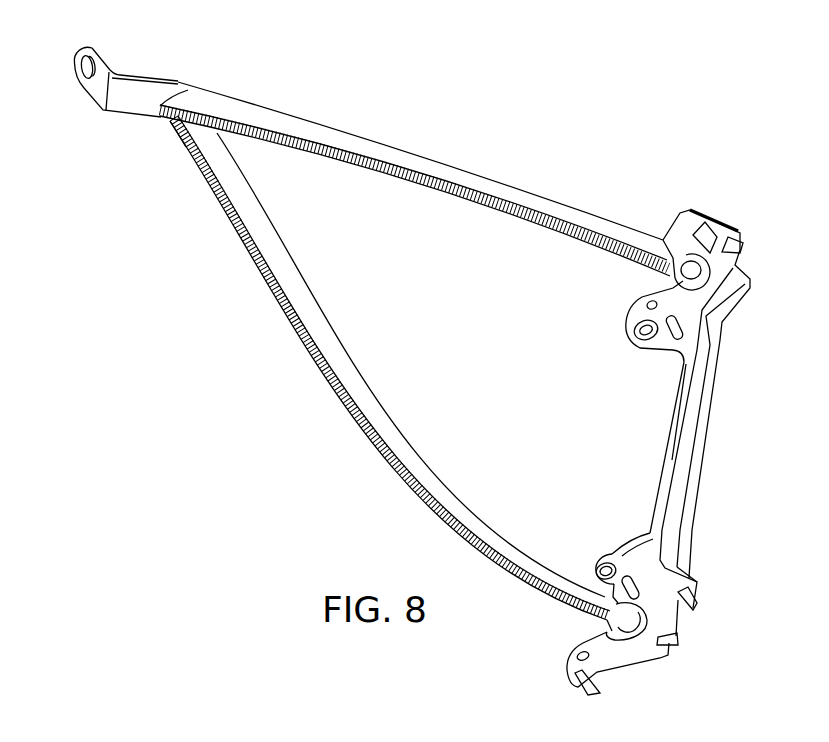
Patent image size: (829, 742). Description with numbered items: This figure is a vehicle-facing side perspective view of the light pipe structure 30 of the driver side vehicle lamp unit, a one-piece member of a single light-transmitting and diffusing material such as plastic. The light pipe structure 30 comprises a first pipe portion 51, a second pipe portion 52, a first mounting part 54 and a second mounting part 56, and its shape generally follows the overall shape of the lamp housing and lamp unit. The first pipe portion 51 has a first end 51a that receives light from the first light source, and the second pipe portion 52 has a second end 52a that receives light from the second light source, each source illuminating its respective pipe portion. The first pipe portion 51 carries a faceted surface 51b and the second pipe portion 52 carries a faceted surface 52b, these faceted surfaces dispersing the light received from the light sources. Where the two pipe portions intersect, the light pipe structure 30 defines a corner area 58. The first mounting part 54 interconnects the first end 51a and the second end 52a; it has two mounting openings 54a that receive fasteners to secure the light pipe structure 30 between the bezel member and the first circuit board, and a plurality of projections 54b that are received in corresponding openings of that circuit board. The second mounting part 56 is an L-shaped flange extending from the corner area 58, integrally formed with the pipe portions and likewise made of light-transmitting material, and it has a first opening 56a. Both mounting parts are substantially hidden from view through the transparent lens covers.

The light pipe structure 30 is at (596, 139).
The first pipe portion 51 is at (443, 163).
The first end 51a is at (676, 254).
The faceted surface 51b is at (418, 190).
The second pipe portion 52 is at (420, 458).
The second end 52a is at (598, 637).
The faceted surface 52b is at (363, 447).
The first mounting part 54 is at (708, 432).
The mounting openings 54a is at (646, 336).
The projections 54b is at (731, 243).
The second mounting part 56 is at (110, 60).
The first opening 56a is at (90, 83).
The corner area 58 is at (183, 127).